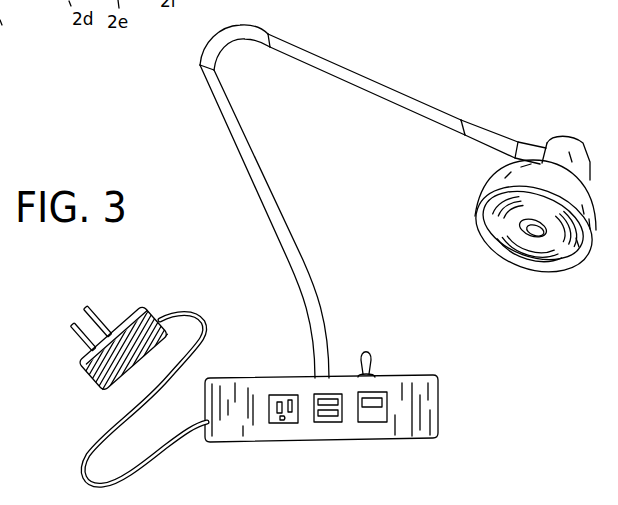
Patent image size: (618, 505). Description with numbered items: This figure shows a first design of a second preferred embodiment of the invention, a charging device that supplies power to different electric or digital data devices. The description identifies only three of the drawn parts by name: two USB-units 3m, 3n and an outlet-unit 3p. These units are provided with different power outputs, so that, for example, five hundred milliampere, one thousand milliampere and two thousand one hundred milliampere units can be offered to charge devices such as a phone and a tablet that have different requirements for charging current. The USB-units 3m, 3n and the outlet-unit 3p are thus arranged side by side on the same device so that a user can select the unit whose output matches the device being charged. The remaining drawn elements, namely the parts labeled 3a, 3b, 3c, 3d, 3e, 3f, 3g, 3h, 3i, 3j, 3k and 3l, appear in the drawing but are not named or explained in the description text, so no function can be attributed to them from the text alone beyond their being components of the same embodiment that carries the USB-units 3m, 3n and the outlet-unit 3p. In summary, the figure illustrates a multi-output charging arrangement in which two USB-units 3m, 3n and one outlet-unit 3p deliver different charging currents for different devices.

The base 3a is at (432, 420).
The power cord 3b is at (200, 312).
The power adapter 3c is at (90, 377).
The prongs 3d is at (72, 320).
The switch 3e is at (372, 368).
The lower arm section 3f is at (248, 157).
The elbow 3g is at (225, 40).
The upper arm section 3h is at (363, 77).
The joint 3i is at (473, 132).
The lamp head 3j is at (515, 182).
The light source 3k is at (533, 235).
The grille 3l is at (487, 220).
The USB-unit 3m is at (372, 418).
The USB-unit 3n is at (328, 418).
The outlet-unit 3p is at (273, 413).